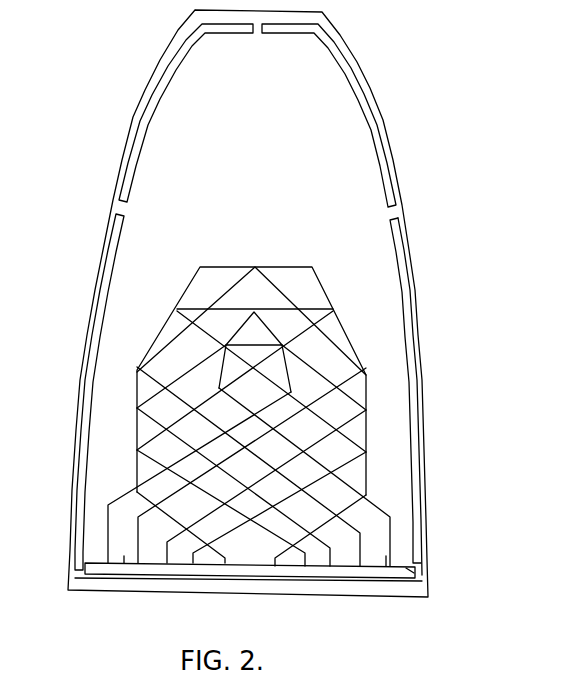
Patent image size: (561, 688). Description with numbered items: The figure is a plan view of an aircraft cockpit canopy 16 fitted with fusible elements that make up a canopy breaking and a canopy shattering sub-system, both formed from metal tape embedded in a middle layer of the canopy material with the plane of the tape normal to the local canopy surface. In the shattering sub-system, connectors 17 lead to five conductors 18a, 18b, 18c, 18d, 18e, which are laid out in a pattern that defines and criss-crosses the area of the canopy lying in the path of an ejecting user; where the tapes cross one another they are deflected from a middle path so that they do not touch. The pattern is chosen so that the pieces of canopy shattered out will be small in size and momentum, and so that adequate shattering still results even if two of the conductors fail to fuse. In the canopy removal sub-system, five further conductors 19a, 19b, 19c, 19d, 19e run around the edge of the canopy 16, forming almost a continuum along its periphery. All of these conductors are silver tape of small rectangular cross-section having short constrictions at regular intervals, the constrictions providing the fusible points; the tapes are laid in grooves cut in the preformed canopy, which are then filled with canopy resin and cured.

The aircraft cockpit canopy 16 is at (252, 153).
The connectors 17 is at (128, 555).
The conductor 18a is at (120, 497).
The conductor 18b is at (145, 513).
The conductor 18c is at (320, 366).
The conductor 18d is at (140, 452).
The conductor 18e is at (345, 481).
The conductor 19a is at (252, 568).
The conductor 19b is at (88, 402).
The conductor 19c is at (410, 415).
The conductor 19d is at (150, 117).
The conductor 19e is at (362, 116).